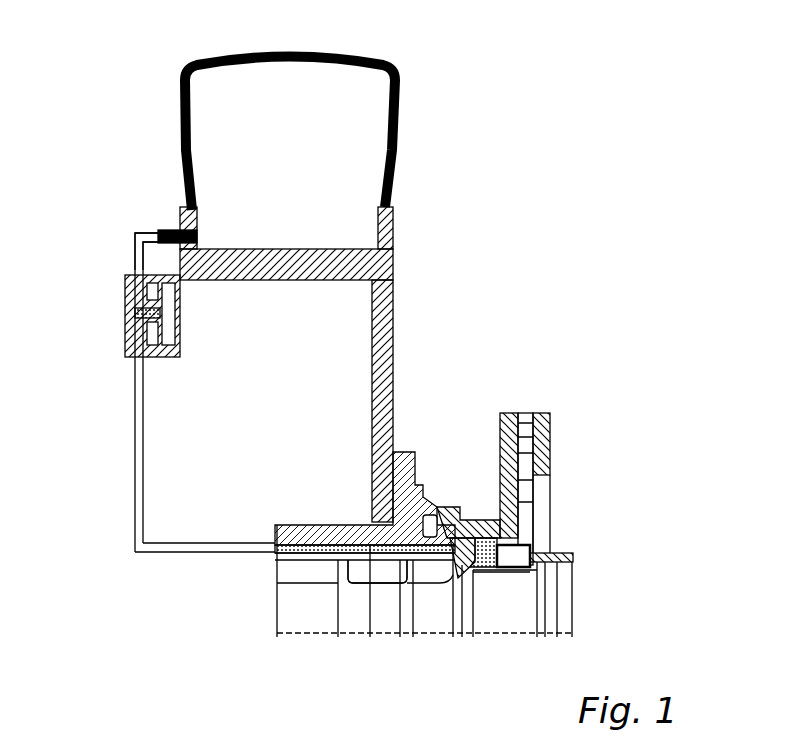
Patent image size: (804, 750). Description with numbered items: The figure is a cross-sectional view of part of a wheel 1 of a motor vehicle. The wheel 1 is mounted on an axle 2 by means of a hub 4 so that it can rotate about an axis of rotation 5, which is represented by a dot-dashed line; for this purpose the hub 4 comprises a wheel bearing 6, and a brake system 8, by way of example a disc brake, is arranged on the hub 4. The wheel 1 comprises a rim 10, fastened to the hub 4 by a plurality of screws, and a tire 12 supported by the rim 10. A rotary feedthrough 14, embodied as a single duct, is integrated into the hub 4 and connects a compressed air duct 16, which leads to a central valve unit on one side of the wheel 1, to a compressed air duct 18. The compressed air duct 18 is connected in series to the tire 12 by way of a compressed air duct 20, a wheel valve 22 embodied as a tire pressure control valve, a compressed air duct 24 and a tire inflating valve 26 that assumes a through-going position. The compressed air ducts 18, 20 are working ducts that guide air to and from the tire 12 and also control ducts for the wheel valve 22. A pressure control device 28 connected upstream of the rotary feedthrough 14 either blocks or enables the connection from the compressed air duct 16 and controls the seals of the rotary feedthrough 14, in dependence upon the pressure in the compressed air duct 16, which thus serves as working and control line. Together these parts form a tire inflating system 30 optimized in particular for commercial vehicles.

The wheel 1 is at (527, 88).
The axle 2 is at (514, 616).
The hub 4 is at (435, 462).
The axis of rotation 5 is at (320, 633).
The wheel bearing 6 is at (270, 567).
The brake system 8 is at (535, 385).
The rim 10 is at (395, 297).
The tire 12 is at (398, 142).
The rotary feedthrough 14 is at (457, 577).
The compressed air duct 16 is at (560, 563).
The compressed air duct 18 is at (360, 583).
The compressed air duct 20 is at (137, 483).
The wheel valve 22 is at (127, 318).
The compressed air duct 24 is at (133, 258).
The tire inflating valve 26 is at (170, 233).
The pressure control device 28 is at (515, 557).
The tire inflating system 30 is at (587, 250).